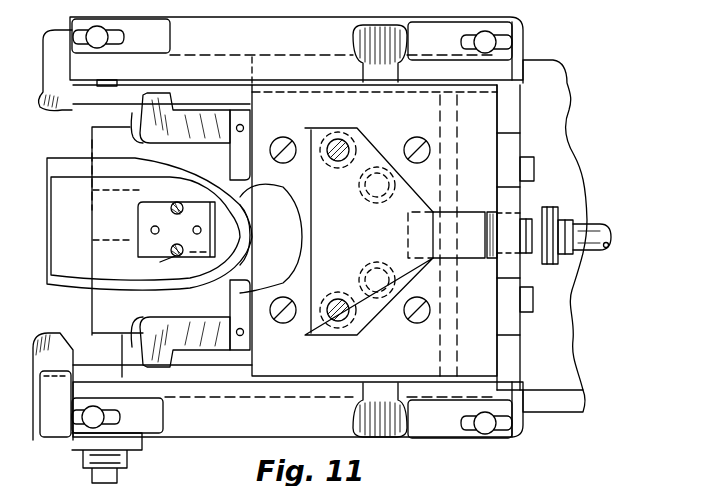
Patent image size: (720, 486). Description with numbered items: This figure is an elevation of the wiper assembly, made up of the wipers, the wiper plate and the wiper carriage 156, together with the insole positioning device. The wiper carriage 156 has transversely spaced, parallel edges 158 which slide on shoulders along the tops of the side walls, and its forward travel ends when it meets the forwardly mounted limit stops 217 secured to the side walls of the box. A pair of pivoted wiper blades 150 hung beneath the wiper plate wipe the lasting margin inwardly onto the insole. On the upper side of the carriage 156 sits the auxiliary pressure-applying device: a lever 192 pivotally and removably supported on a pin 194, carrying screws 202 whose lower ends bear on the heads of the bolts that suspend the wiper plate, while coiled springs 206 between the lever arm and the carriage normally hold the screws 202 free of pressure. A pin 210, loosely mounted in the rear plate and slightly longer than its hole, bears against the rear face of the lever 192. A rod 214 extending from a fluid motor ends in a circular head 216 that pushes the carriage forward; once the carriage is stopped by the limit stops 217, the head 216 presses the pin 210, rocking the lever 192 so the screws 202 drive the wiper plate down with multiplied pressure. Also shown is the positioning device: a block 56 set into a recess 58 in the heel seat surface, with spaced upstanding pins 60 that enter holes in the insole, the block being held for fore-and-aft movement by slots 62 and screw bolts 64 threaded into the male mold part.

The block 56 is at (145, 215).
The recess 58 is at (144, 202).
The pins 60 is at (152, 233).
The slots 62 is at (179, 202).
The screw bolts 64 is at (177, 254).
The wiper blades 150 is at (393, 432).
The wiper carriage 156 is at (487, 113).
The parallel edges 158 is at (300, 42).
The lever 192 is at (392, 135).
The pin 194 is at (432, 334).
The screws 202 is at (342, 334).
The coiled springs 206 is at (372, 265).
The pin 210 is at (529, 258).
The rod 214 is at (596, 243).
The circular head 216 is at (560, 214).
The limit stops 217 is at (168, 32).